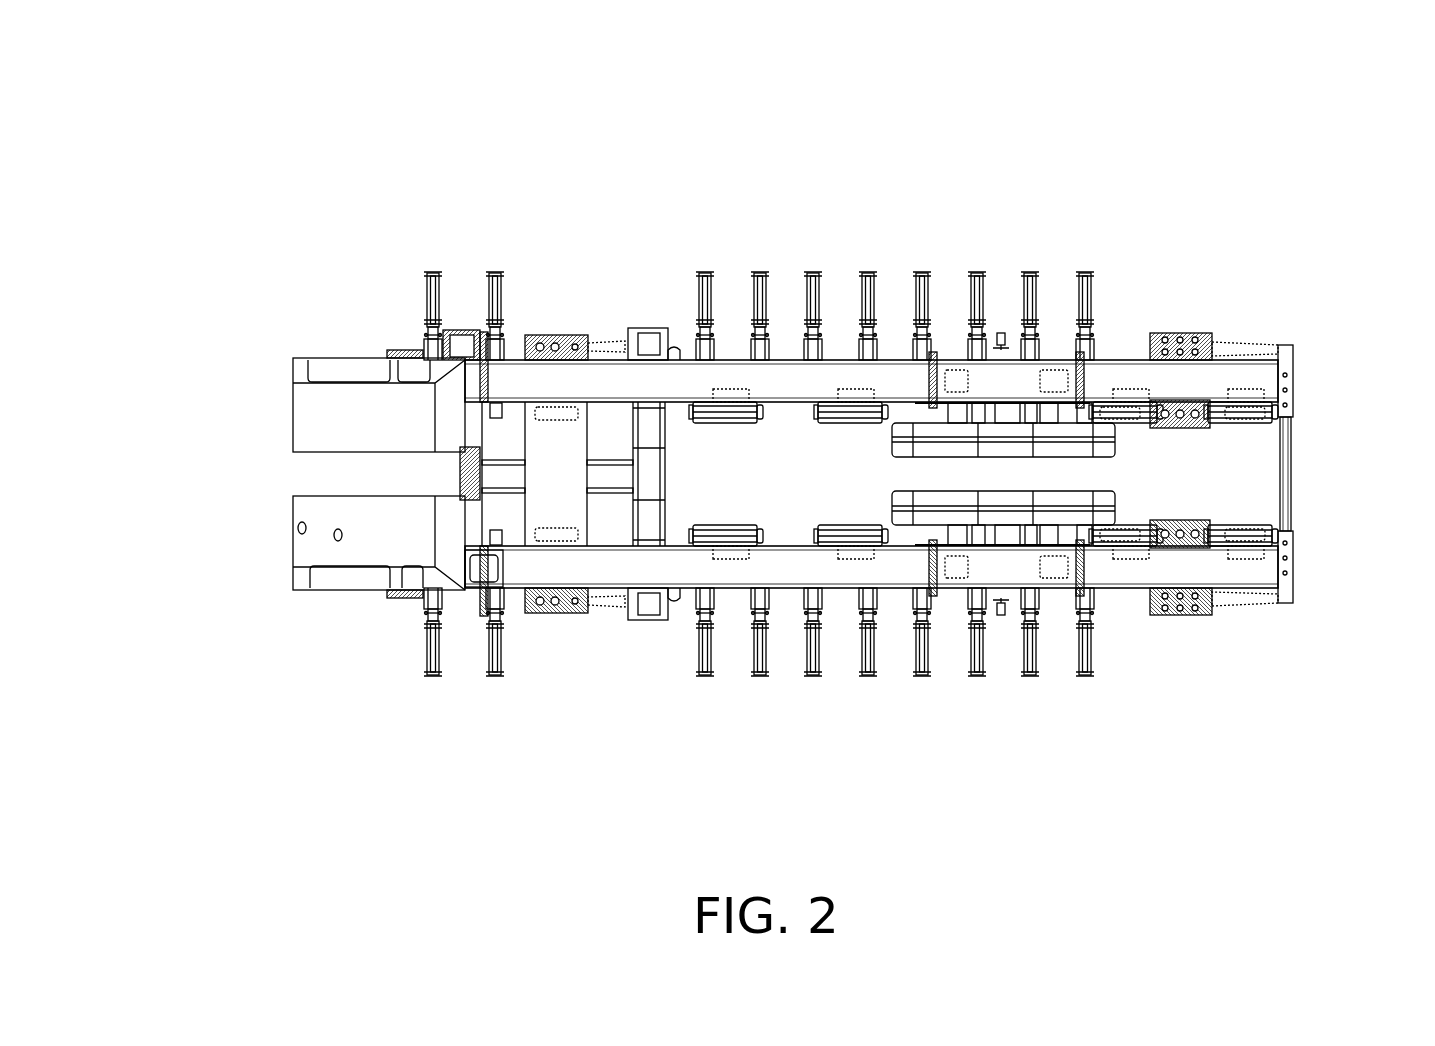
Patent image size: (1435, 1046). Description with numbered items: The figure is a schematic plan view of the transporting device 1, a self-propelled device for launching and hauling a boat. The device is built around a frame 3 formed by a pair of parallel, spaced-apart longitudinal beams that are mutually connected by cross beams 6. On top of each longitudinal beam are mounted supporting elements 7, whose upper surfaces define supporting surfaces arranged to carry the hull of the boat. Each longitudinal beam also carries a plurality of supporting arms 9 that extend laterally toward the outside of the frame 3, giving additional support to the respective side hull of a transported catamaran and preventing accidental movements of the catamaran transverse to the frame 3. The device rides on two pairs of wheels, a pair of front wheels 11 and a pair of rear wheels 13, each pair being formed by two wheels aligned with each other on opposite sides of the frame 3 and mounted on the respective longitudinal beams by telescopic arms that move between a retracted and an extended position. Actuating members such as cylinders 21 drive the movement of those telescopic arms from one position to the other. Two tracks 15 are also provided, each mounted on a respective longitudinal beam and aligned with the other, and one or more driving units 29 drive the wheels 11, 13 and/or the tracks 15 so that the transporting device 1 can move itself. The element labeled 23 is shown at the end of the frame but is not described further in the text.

The transporting device 1 is at (313, 236).
The frame 3 is at (1293, 373).
The cross beams 6 is at (557, 443).
The supporting elements 7 is at (722, 408).
The supporting arms 9 is at (497, 270).
The front wheels 11 is at (565, 347).
The rear wheels 13 is at (1177, 342).
The tracks 15 is at (922, 435).
The cylinders 21 is at (626, 357).
The connecting piece 23 is at (1255, 347).
The driving units 29 is at (308, 418).